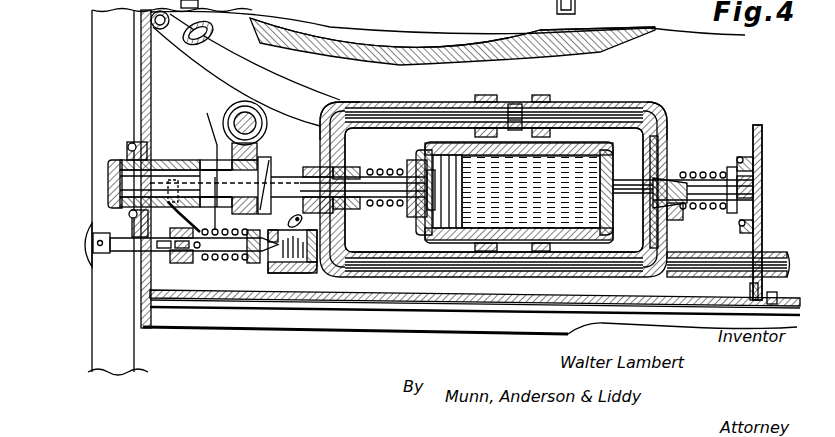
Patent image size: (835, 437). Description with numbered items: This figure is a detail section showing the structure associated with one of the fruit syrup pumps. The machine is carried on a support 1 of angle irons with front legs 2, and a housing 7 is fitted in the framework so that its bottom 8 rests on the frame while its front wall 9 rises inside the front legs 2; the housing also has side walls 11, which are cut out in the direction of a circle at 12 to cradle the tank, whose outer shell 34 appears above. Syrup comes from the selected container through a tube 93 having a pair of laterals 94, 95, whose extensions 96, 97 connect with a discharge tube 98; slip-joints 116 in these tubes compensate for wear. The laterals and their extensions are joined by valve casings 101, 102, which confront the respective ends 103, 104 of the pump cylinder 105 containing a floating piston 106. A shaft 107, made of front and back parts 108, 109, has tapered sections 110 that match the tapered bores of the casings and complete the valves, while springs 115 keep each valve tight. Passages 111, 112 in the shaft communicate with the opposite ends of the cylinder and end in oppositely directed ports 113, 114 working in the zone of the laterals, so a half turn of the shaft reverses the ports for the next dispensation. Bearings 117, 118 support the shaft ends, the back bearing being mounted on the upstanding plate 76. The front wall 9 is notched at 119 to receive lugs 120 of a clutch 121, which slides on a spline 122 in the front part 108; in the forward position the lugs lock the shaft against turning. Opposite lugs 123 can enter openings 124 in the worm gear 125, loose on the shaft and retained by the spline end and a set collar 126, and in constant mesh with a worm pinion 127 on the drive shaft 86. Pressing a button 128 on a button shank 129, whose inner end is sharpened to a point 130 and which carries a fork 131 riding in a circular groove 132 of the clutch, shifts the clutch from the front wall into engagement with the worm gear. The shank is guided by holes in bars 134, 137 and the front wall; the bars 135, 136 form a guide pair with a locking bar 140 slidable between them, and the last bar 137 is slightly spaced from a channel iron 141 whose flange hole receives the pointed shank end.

The support 1 is at (81, 31).
The front legs 2 is at (104, 46).
The housing 7 is at (150, 59).
The bottom 8 is at (128, 222).
The front wall 9 is at (152, 68).
The side walls 11 is at (200, 111).
The circular cut-out 12 is at (641, 43).
The outer shell 34 is at (612, 47).
The upstanding plate 76 is at (763, 133).
The drive shaft 86 is at (243, 103).
The tube 93 is at (786, 250).
The lateral 94 is at (670, 222).
The lateral 95 is at (350, 218).
The extension 96 is at (670, 140).
The extension 97 is at (395, 104).
The discharge tube 98 is at (422, 110).
The valve casing 101 is at (672, 160).
The valve casing 102 is at (381, 222).
The cylinder end 103 is at (652, 113).
The cylinder end 104 is at (421, 222).
The pump cylinder 105 is at (555, 148).
The floating piston 106 is at (500, 85).
The shaft 107 is at (268, 168).
The front part 108 is at (332, 113).
The back part 109 is at (708, 172).
The tapered sections 110 is at (374, 104).
The passage 111 is at (388, 222).
The passage 112 is at (662, 268).
The port 113 is at (370, 222).
The port 114 is at (674, 210).
The springs 115 is at (408, 222).
The slip-joints 116 is at (522, 97).
The bearing 117 is at (116, 180).
The bearing 118 is at (762, 170).
The notches 119 is at (118, 173).
The lugs 120 is at (126, 165).
The clutch 121 is at (148, 150).
The spline 122 is at (130, 213).
The lugs 123 is at (205, 165).
The openings 124 is at (268, 274).
The worm gear 125 is at (275, 274).
The set collar 126 is at (280, 178).
The worm pinion 127 is at (250, 110).
The button 128 is at (148, 249).
The button shank 129 is at (134, 247).
The point 130 is at (286, 274).
The fork 131 is at (128, 244).
The circular groove 132 is at (98, 243).
The bar 134 is at (157, 303).
The bar 135 is at (176, 264).
The bar 136 is at (250, 264).
The bar 137 is at (258, 262).
The locking bar 140 is at (185, 264).
The channel iron 141 is at (300, 274).